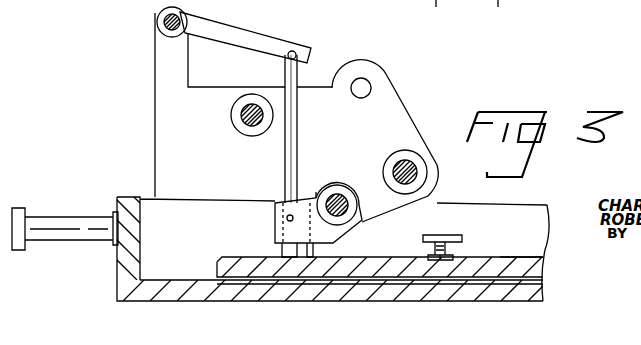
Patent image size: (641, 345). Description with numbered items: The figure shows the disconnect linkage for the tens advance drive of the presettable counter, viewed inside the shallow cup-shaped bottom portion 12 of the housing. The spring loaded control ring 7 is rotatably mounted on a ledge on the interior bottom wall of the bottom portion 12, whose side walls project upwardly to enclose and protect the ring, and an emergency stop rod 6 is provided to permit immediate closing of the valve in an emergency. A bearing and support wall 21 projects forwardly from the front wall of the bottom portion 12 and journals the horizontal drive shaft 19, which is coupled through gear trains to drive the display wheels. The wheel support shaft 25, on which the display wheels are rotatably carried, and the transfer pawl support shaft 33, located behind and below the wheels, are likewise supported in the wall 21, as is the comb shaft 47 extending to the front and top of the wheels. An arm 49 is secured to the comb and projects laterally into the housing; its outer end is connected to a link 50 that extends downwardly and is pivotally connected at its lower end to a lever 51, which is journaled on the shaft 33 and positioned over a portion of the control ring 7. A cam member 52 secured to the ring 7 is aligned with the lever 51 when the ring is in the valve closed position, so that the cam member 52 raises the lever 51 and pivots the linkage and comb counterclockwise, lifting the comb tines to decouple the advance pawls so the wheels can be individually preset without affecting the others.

The emergency stop rod 6 is at (63, 222).
The control ring 7 is at (518, 268).
The bottom portion 12 is at (122, 288).
The horizontal drive shaft 19 is at (416, 180).
The bearing and support wall 21 is at (410, 110).
The wheel support shaft 25 is at (246, 120).
The transfer pawl support shaft 33 is at (340, 218).
The comb shaft 47 is at (162, 18).
The arm 49 is at (250, 43).
The link 50 is at (292, 138).
The lever 51 is at (316, 192).
The cam member 52 is at (457, 235).